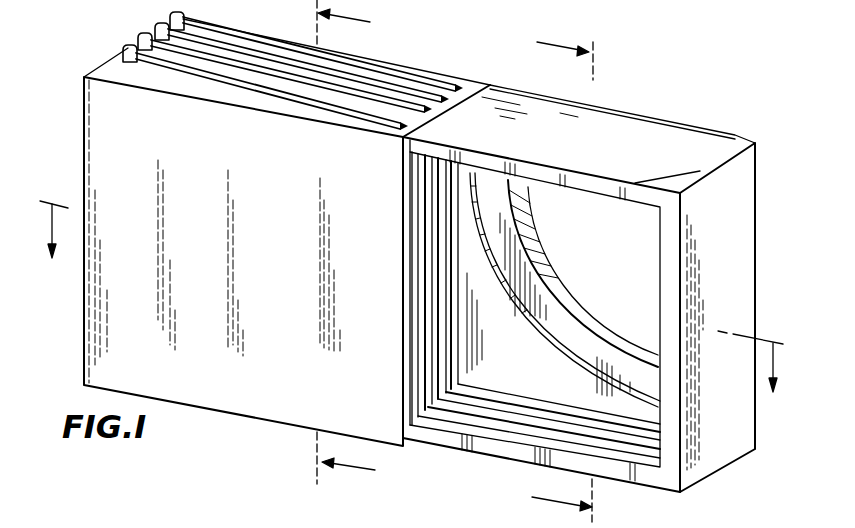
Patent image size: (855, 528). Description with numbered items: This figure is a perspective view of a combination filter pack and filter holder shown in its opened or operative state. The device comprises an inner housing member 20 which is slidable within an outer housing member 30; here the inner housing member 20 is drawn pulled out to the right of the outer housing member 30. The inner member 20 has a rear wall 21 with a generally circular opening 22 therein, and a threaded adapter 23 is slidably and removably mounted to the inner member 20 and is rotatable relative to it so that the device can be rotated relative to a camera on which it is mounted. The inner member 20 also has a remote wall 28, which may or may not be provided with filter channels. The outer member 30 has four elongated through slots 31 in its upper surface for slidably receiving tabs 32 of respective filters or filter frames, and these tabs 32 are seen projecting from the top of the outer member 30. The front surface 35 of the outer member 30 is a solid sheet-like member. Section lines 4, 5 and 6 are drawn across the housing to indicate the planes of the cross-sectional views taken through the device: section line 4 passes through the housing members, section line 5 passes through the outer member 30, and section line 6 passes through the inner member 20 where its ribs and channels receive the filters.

The inner housing member 20 is at (667, 157).
The rear wall 21 is at (498, 327).
The circular opening 22 is at (545, 350).
The threaded adapter 23 is at (490, 193).
The remote wall 28 is at (745, 216).
The outer housing member 30 is at (128, 153).
The elongated through slots 31 is at (220, 47).
The tabs 32 is at (168, 15).
The front surface 35 is at (127, 333).
The section line 4- 4 is at (411, 311).
The section line 5- 5 is at (333, 242).
The section line 6- 6 is at (572, 284).